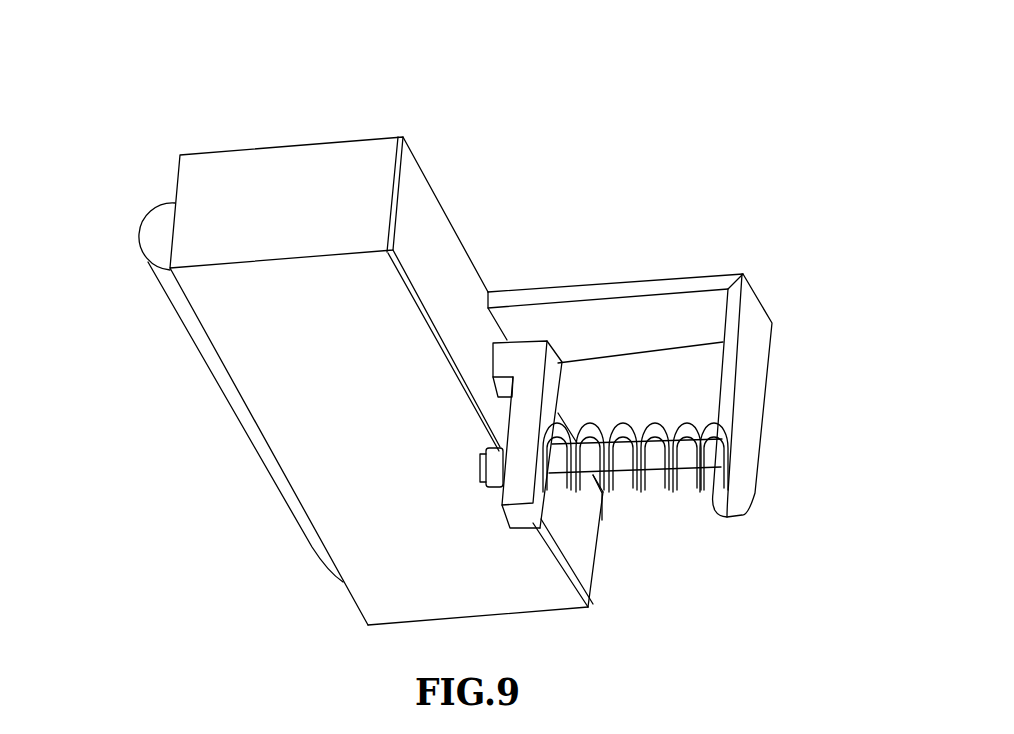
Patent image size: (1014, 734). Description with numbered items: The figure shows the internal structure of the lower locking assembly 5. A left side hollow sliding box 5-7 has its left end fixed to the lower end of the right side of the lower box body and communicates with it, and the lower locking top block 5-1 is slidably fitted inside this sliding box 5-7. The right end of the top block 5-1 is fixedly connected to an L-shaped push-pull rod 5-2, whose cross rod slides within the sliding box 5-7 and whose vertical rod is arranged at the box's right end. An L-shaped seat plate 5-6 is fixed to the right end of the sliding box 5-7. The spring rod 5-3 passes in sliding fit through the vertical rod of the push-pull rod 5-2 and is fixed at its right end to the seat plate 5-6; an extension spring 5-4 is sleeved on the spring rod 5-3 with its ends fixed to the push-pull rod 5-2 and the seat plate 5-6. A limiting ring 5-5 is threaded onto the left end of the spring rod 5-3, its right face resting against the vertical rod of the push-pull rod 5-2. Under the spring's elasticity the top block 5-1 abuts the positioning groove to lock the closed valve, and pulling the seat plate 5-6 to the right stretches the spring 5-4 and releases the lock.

The lower locking assembly 5 is at (248, 128).
The lower locking top block 5-1 is at (163, 243).
The L-shaped push-pull rod 5-2 is at (527, 358).
The spring rod 5-3 is at (660, 455).
The extension spring 5-4 is at (655, 420).
The limiting ring 5-5 is at (485, 470).
The L-shaped seat plate 5-6 is at (747, 368).
The left side hollow sliding box 5-7 is at (433, 200).